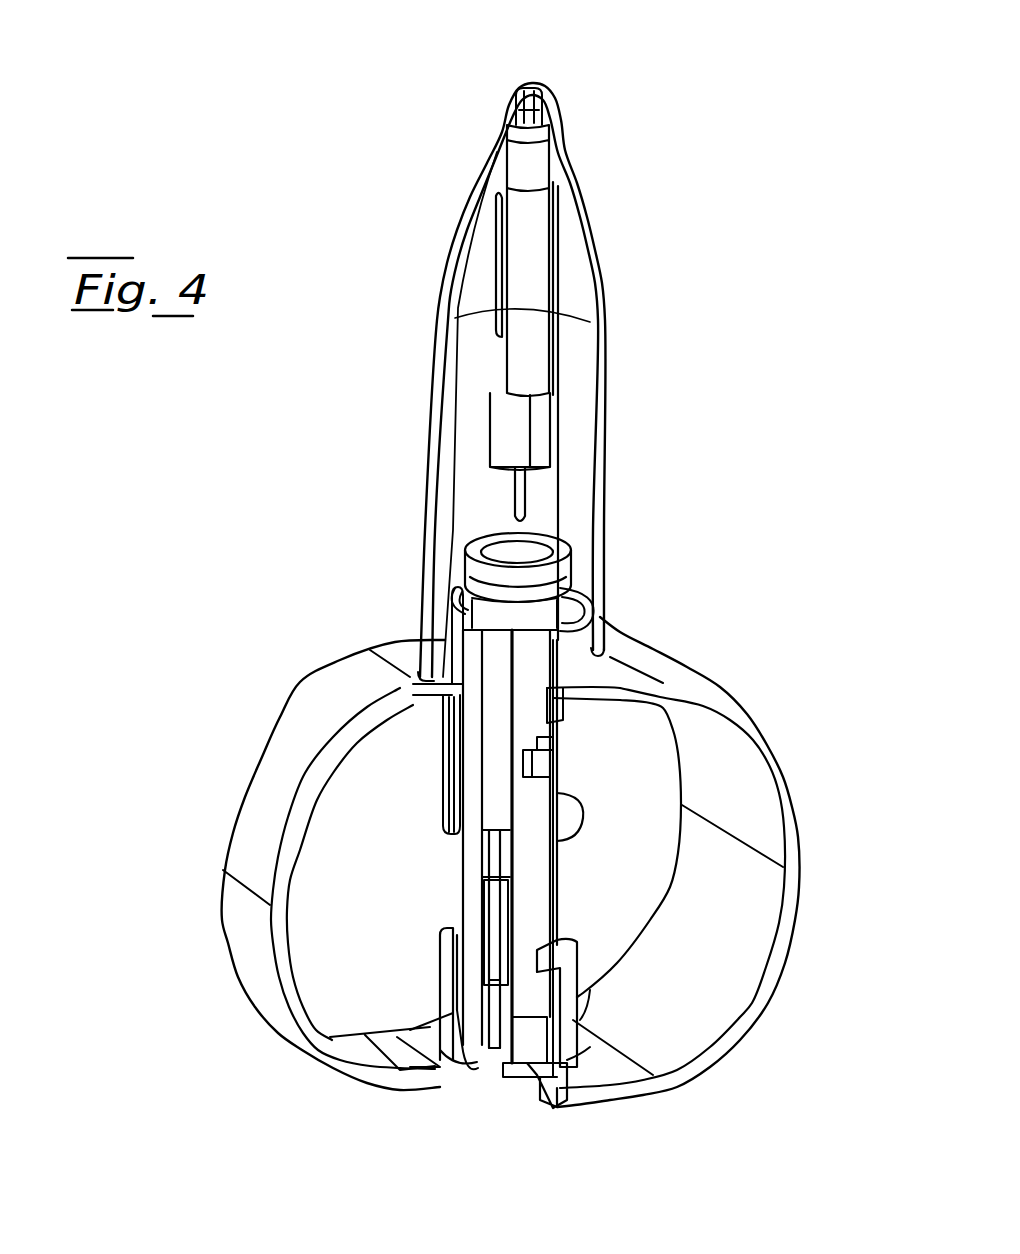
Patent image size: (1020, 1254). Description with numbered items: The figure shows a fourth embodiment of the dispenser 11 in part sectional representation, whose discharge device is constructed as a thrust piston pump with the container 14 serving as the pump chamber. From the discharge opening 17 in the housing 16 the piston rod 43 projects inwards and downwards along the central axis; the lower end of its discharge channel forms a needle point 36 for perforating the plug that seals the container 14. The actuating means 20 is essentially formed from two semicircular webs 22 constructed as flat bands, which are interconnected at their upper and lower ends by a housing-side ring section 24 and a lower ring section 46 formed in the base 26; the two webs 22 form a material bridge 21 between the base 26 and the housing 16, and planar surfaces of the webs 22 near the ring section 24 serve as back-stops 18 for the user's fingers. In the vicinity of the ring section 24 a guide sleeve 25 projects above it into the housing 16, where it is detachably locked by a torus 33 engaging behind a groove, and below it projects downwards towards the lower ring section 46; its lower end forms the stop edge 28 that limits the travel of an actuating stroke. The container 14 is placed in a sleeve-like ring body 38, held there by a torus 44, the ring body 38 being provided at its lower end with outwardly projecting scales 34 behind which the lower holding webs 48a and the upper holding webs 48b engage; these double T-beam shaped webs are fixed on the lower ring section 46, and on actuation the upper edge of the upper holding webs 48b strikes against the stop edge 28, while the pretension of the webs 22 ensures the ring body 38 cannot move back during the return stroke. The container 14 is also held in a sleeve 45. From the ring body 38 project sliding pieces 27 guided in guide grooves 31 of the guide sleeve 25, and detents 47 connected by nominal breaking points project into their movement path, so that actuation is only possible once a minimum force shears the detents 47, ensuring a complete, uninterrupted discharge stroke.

The dispenser 11 is at (230, 478).
The container 14 is at (612, 590).
The housing 16 is at (437, 300).
The discharge opening 17 is at (538, 62).
The back-stops 18 is at (407, 700).
The actuating means 20 is at (812, 718).
The material bridge 21 is at (811, 967).
The webs 22 is at (334, 714).
The ring section 24 is at (596, 705).
The guide sleeve 25 is at (447, 650).
The base 26 is at (612, 1068).
The sliding pieces 27 is at (543, 783).
The stop edge 28 is at (448, 830).
The guide grooves 31 is at (575, 797).
The torus 33 is at (583, 603).
The scales 34 is at (541, 1054).
The needle point 36 is at (520, 490).
The ring body 38 is at (545, 878).
The piston rod 43 is at (536, 280).
The torus 44 is at (565, 545).
The sleeve 45 is at (545, 930).
The lower ring section 46 is at (543, 1093).
The detents 47 is at (540, 737).
The lower holding webs 48a is at (440, 1065).
The upper holding webs 48b is at (440, 950).